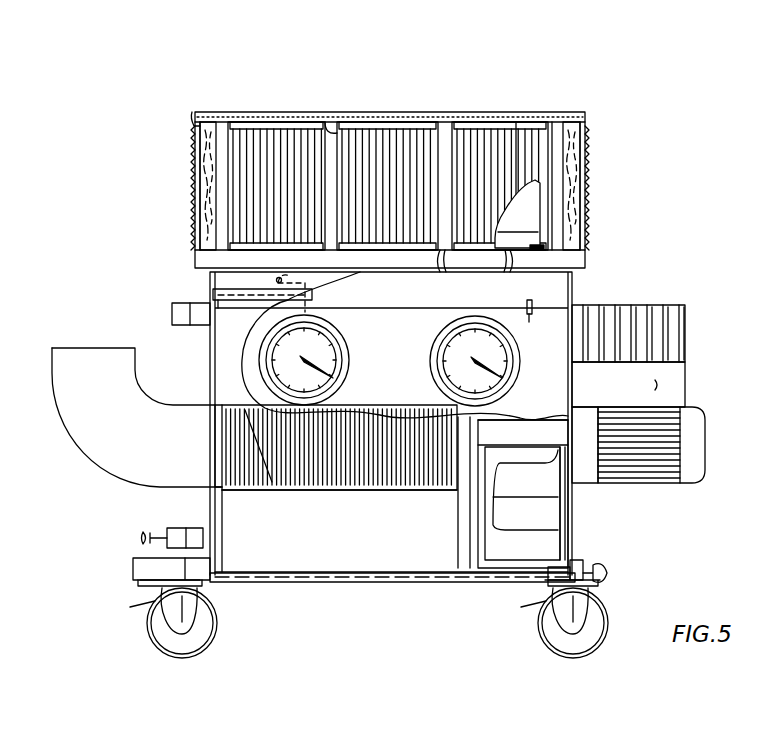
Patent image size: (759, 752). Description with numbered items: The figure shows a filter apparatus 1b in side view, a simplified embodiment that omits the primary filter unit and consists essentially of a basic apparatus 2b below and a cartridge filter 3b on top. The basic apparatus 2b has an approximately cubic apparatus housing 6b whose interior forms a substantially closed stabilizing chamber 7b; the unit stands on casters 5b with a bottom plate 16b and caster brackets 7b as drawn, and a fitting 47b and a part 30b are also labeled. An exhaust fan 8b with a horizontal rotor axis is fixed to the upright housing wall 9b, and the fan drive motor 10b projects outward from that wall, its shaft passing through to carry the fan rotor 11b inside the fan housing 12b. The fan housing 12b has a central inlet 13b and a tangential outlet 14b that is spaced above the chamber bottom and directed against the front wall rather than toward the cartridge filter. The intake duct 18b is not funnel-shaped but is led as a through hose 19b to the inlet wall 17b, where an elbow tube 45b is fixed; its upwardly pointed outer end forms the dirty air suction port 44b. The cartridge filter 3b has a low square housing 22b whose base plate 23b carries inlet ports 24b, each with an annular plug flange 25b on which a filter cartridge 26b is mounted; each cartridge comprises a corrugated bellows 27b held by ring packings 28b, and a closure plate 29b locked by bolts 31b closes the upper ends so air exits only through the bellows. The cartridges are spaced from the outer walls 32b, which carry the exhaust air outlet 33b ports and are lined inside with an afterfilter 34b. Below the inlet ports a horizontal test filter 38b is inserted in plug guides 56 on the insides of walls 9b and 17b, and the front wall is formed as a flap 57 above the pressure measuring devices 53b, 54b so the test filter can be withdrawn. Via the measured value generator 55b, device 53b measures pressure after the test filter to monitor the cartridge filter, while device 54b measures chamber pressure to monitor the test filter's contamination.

The filter apparatus 1b is at (78, 80).
The basic apparatus 2b is at (708, 317).
The cartridge filter 3b is at (610, 88).
The casters 5b is at (127, 635).
The apparatus housing 6b is at (428, 582).
The stabilizing chamber 7b is at (263, 582).
The exhaust fan 8b is at (437, 526).
The housing wall 9b is at (572, 390).
The fan drive motor 10b is at (630, 483).
The fan rotor 11b is at (550, 532).
The fan housing 12b is at (525, 428).
The inlet 13b is at (455, 425).
The outlet 14b is at (478, 560).
The bottom wall 16b is at (370, 572).
The inlet wall 17b is at (208, 328).
The intake duct 18b is at (323, 522).
The hose 19b is at (360, 490).
The housing 22b is at (590, 255).
The base plate 23b is at (445, 268).
The inlet ports 24b is at (503, 268).
The plug flange 25b is at (530, 242).
The filter cartridges 26b is at (330, 128).
The corrugated bellows 27b is at (518, 130).
The ring packings 28b is at (478, 122).
The closure plate 29b is at (410, 122).
The first filter cartridge 30b is at (300, 122).
The bolts 31b is at (194, 120).
The outer walls 32b is at (590, 176).
The exhaust air outlet 33b is at (190, 146).
The afterfilter 34b is at (208, 176).
The test filter 38b is at (300, 292).
The dirty air suction port 44b is at (95, 348).
The elbow tube 45b is at (95, 455).
The drain valve 47b is at (176, 528).
The pressure measuring device 53b is at (330, 390).
The pressure measuring device 54b is at (432, 358).
The measured value generator 55b is at (300, 276).
The plug guides 56 is at (232, 317).
The flap 57 is at (408, 298).